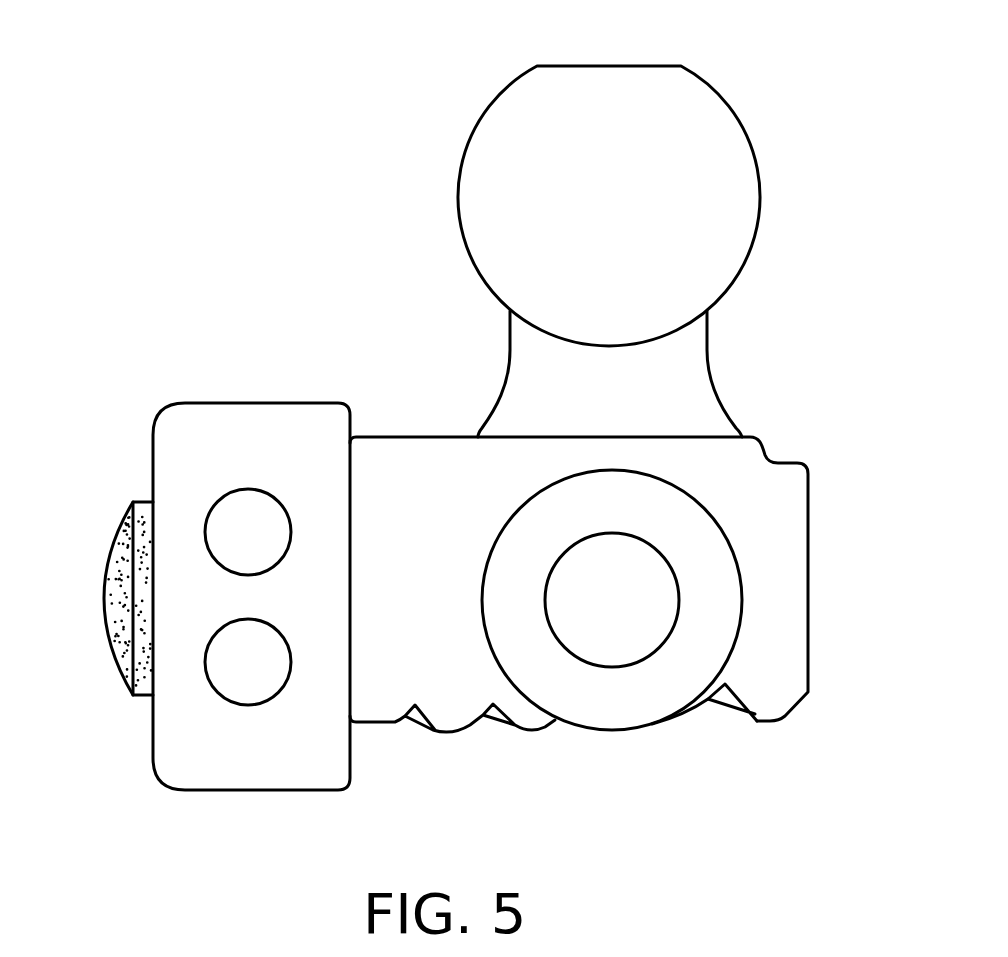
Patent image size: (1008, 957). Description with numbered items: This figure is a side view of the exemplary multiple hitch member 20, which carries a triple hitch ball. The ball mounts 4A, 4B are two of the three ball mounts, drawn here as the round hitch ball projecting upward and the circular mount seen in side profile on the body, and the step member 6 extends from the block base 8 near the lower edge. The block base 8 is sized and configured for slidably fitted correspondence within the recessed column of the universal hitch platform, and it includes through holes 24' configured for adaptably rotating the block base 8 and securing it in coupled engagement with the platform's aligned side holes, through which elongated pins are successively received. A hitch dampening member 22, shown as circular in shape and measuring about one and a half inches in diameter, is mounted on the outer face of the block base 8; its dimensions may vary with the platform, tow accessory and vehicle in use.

The multiple hitch member 20 is at (826, 67).
The ball mount 4A is at (472, 201).
The ball mount 4B is at (707, 588).
The step member 6 is at (748, 722).
The block base 8 is at (167, 463).
The hitch dampening member 22 is at (112, 590).
The through holes 24' is at (248, 505).